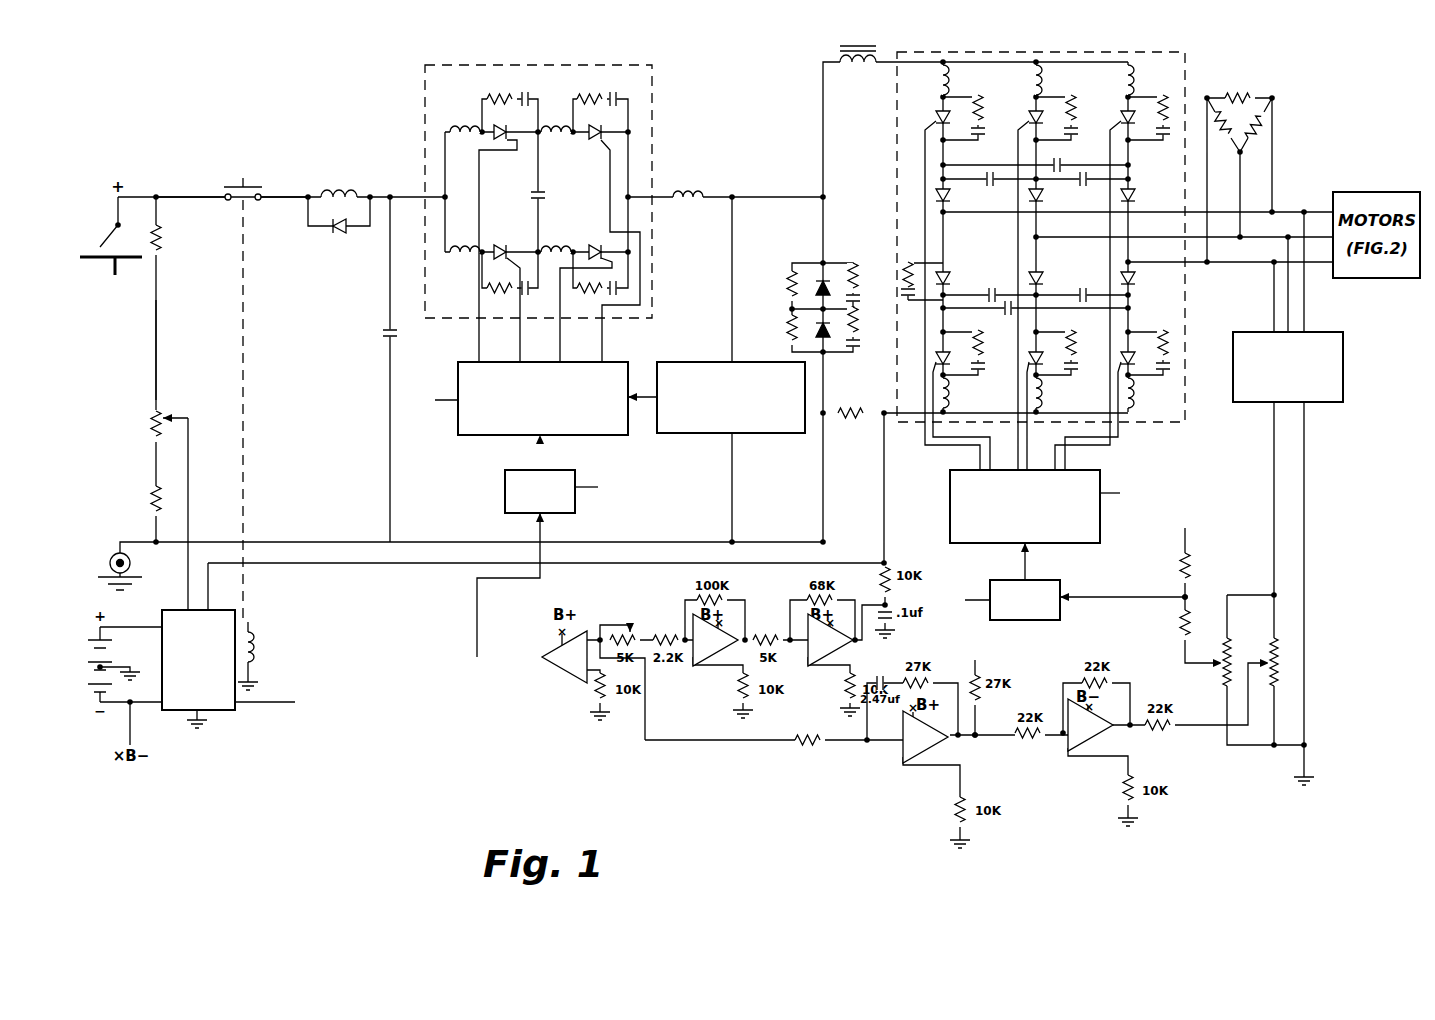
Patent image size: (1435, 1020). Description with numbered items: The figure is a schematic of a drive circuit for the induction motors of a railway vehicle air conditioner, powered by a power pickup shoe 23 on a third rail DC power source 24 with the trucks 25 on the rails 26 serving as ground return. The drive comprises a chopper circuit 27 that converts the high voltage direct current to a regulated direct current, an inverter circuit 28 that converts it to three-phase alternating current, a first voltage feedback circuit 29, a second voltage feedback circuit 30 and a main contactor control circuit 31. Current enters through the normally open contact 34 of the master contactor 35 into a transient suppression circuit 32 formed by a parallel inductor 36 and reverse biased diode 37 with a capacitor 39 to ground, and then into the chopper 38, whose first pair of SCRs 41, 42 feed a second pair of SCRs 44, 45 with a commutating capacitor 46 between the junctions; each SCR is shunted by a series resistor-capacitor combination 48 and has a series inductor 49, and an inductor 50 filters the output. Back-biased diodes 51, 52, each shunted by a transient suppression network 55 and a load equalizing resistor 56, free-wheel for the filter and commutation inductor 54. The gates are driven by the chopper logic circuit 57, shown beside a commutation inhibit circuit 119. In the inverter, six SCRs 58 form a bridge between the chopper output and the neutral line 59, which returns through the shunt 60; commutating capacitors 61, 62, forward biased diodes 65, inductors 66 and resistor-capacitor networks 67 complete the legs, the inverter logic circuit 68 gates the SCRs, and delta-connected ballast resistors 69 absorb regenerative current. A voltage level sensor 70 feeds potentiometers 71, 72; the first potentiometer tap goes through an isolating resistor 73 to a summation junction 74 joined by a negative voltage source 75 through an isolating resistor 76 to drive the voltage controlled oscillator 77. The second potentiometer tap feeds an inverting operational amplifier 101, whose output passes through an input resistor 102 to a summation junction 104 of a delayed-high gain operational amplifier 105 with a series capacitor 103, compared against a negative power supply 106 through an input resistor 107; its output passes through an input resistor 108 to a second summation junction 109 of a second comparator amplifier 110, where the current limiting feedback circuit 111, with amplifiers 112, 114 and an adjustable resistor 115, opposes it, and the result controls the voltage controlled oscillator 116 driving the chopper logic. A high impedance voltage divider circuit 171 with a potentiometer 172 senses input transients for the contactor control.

The power pickup shoe 23 is at (116, 234).
The third rail DC power source 24 is at (111, 282).
The trucks 25 is at (118, 548).
The rails 26 is at (130, 581).
The chopper circuit 27 is at (687, 316).
The inverter circuit 28 is at (1041, 237).
The first voltage feedback circuit 29 is at (1111, 584).
The second voltage feedback circuit 30 is at (1021, 710).
The main contactor control circuit 31 is at (215, 712).
The transient suppression circuit 32 is at (360, 278).
The normally open contact 34 is at (245, 170).
The master contactor 35 is at (258, 645).
The inductor 36 is at (330, 183).
The reverse biased diode 37 is at (336, 236).
The chopper 38 is at (645, 157).
The capacitor 39 is at (398, 338).
The silicon controlled rectifier 41 is at (485, 148).
The silicon controlled rectifier 42 is at (513, 290).
The silicon controlled rectifier 44 is at (590, 145).
The silicon controlled rectifier 45 is at (586, 285).
The commutating capacitor 46 is at (552, 185).
The series resistor-capacitor combination 48 is at (590, 295).
The inductor 49 is at (562, 245).
The inductor 50 is at (690, 183).
The back-biased diode 51 is at (832, 278).
The back-biased diode 52 is at (830, 336).
The filter and commutation inductor 54 is at (822, 60).
The series resistor-capacitor voltage transient suppression network 55 is at (876, 314).
The load equalizing resistor 56 is at (787, 332).
The chopper logic circuit 57 is at (603, 435).
The silicon controlled rectifier 58 is at (1121, 360).
The neutral line 59 is at (1130, 422).
The shunt 60 is at (855, 420).
The commutating capacitor 61 is at (1067, 198).
The commutating capacitor 62 is at (1002, 325).
The forward biased diode 65 is at (1135, 280).
The inductor 66 is at (1133, 395).
The series connected resistor and capacitor 67 is at (1170, 340).
The inverter logic circuit 68 is at (1100, 527).
The ballast resistors 69 is at (1232, 94).
The voltage level sensor 70 is at (1233, 393).
The first potentiometer 71 is at (1235, 652).
The second potentiometer 72 is at (1282, 660).
The isolating resistor 73 is at (1178, 627).
The summation junction 74 is at (1190, 594).
The negative voltage source 75 is at (1188, 520).
The isolating resistor 76 is at (1190, 565).
The voltage controlled oscillator 77 is at (1045, 580).
The inverting operational amplifier 101 is at (1088, 748).
The input resistor 102 is at (1030, 742).
The series capacitor 103 is at (895, 678).
The summation junction 104 is at (977, 745).
The delayed-high gain operational amplifier 105 is at (923, 760).
The negative power supply 106 is at (968, 655).
The input resistor 107 is at (983, 698).
The input resistor 108 is at (800, 748).
The second summation junction 109 is at (598, 622).
The second high gain comparator operational amplifier 110 is at (562, 673).
The current limiting feedback circuit 111 is at (765, 620).
The low gain operational amplifier 112 is at (828, 662).
The low gain operational amplifier 114 is at (713, 662).
The adjustable resistor 115 is at (640, 628).
The voltage controlled oscillator 116 is at (560, 513).
The chopper commutation inhibit 119 is at (760, 433).
The high impedance voltage divider circuit 171 is at (164, 360).
The potentiometer 172 is at (164, 414).